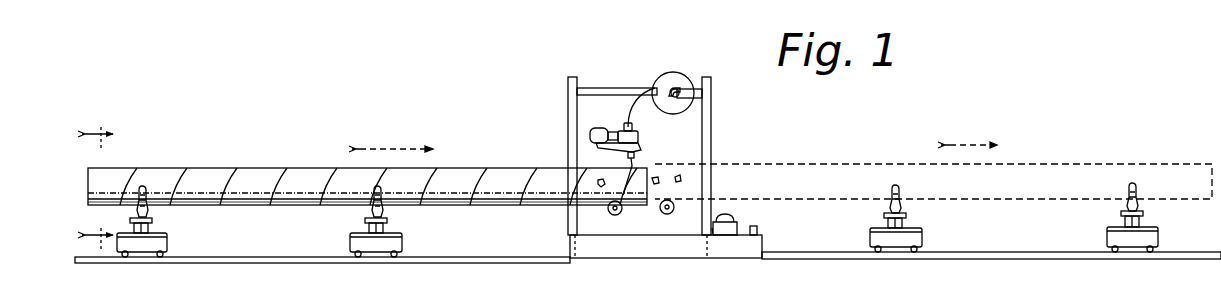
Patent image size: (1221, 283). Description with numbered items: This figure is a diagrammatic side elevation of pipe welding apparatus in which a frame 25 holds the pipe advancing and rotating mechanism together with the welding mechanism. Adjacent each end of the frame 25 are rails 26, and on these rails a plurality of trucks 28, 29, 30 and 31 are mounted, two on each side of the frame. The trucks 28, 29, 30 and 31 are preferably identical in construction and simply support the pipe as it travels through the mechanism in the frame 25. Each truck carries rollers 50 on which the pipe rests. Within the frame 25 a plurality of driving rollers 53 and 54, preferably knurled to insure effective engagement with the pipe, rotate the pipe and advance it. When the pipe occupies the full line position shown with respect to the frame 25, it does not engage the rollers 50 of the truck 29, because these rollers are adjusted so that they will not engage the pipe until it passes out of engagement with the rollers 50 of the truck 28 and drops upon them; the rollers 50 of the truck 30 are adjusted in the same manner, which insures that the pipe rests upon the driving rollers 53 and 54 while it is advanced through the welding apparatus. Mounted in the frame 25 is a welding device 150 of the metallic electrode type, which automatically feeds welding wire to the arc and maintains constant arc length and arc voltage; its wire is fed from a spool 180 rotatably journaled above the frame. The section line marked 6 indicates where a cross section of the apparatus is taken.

The section line 6- 6 is at (101, 192).
The frame 25 is at (713, 122).
The rails 26 is at (475, 257).
The truck 28 is at (167, 240).
The truck 29 is at (350, 238).
The truck 30 is at (922, 233).
The truck 31 is at (1158, 233).
The rollers 50 is at (145, 188).
The driving roller 53 is at (612, 214).
The driving roller 54 is at (664, 213).
The welding device 150 is at (640, 134).
The spool 180 is at (680, 76).